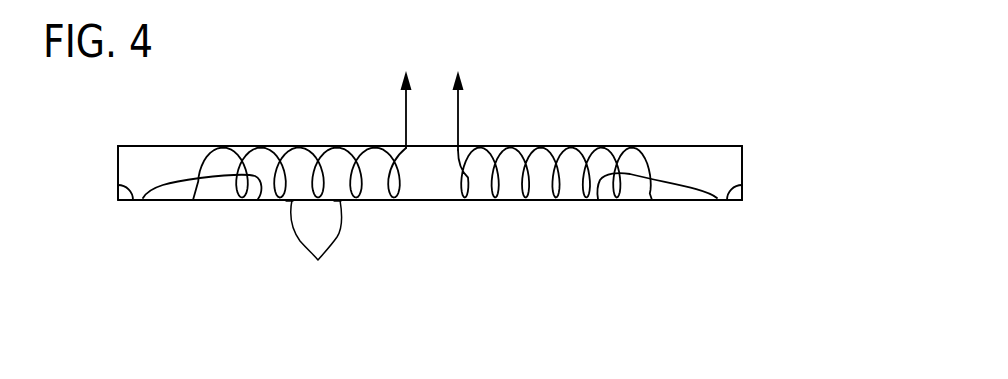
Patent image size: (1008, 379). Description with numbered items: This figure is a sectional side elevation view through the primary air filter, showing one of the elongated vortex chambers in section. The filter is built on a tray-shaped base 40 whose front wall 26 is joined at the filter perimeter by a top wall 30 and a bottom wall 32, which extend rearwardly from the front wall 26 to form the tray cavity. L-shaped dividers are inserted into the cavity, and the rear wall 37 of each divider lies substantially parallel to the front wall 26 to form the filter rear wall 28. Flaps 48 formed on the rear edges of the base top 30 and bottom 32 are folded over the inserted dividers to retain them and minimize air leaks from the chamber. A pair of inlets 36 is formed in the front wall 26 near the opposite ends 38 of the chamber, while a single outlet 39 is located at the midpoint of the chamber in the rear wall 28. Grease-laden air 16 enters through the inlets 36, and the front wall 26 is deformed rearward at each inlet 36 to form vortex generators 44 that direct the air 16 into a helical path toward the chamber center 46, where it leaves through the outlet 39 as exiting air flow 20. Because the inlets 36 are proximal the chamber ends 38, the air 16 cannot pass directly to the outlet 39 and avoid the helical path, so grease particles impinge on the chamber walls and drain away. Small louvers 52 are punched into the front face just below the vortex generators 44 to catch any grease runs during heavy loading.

The grease-laden air 16 is at (195, 214).
The outlet flow 20 is at (459, 117).
The front wall 26 is at (392, 241).
The rear wall 28 is at (406, 116).
The top wall 30 is at (118, 174).
The bottom wall 32 is at (743, 170).
The inlets 36 is at (223, 194).
The rear wall of divider 37 is at (554, 147).
The chamber ends 38 is at (127, 197).
The outlet 39 is at (428, 146).
The tray-shaped base 40 is at (743, 201).
The vortex generators 44 is at (172, 190).
The chamber center 46 is at (436, 201).
The flaps 48 is at (120, 146).
The louvers 52 is at (314, 244).